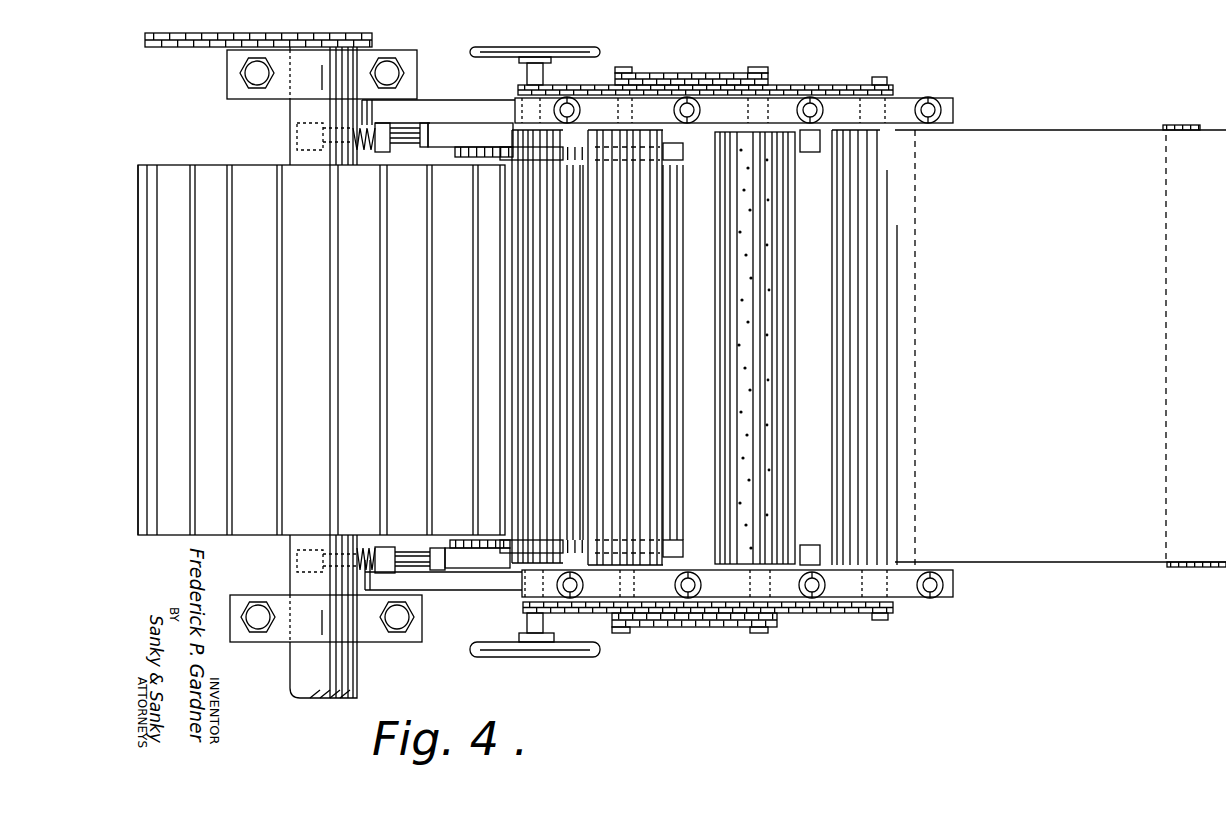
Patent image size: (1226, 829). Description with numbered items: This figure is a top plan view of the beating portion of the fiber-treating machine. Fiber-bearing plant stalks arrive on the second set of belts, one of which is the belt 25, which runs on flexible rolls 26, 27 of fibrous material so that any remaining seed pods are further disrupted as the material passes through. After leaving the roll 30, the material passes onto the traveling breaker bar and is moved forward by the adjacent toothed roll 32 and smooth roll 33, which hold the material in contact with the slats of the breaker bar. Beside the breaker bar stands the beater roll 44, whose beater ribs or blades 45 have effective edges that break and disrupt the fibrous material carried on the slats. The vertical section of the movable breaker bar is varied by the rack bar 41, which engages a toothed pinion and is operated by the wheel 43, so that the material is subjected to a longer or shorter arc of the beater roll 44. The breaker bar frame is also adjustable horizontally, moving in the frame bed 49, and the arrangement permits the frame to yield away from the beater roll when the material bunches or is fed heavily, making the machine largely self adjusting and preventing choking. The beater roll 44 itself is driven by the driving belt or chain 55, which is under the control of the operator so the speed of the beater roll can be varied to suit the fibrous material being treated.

The belt 25 is at (1062, 552).
The flexible roll 26 is at (1185, 121).
The flexible roll 27 is at (924, 192).
The roll 30 is at (789, 502).
The toothed roll 32 is at (661, 503).
The smooth roll 33 is at (505, 140).
The rack bar 41 is at (478, 552).
The wheel 43 is at (467, 55).
The beater roll 44 is at (223, 537).
The beater ribs or blades 45 is at (164, 540).
The frame bed 49 is at (366, 152).
The driving belt or chain 55 is at (193, 57).